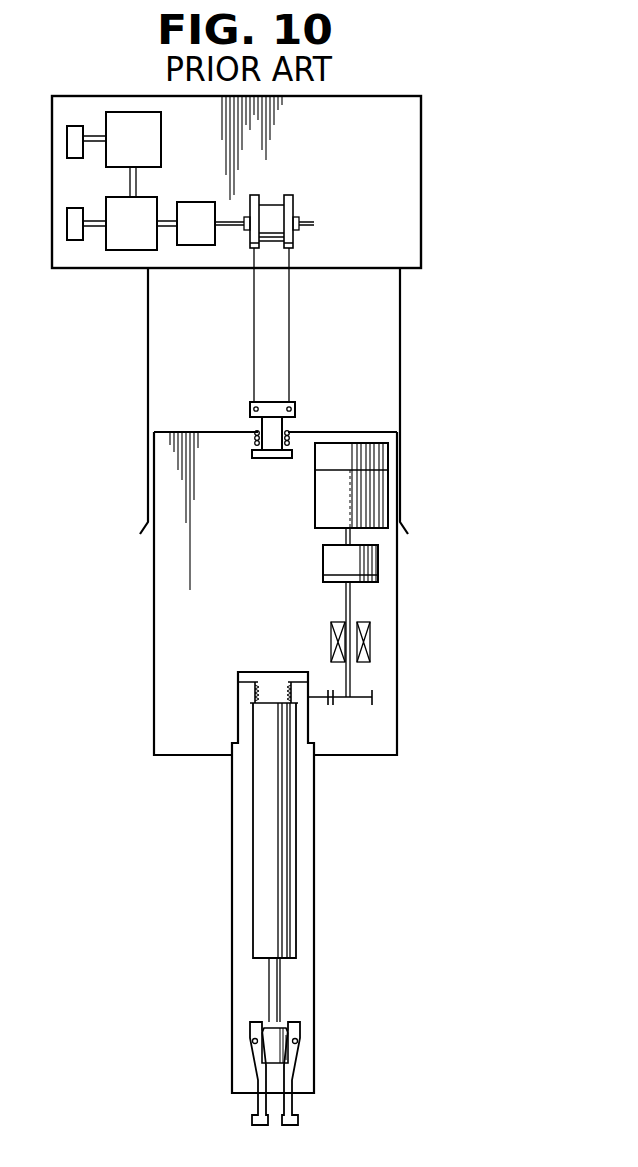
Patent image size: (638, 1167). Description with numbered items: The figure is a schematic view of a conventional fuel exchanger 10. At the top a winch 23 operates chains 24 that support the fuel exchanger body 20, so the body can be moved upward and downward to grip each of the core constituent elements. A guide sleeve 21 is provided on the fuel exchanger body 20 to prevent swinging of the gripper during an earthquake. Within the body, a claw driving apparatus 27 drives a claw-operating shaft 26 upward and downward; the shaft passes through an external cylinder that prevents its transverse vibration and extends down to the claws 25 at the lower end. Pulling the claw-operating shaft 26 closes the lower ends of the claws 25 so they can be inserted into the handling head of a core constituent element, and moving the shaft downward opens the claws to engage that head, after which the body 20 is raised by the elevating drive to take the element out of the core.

The fuel exchanger 10 is at (447, 393).
The fuel exchanger body 20 is at (399, 661).
The guide sleeve 21 is at (315, 905).
The winch 23 is at (419, 216).
The chains 24 is at (289, 357).
The claws 25 is at (293, 1078).
The claw-operating shaft 26 is at (268, 995).
The claw driving apparatus 27 is at (320, 510).